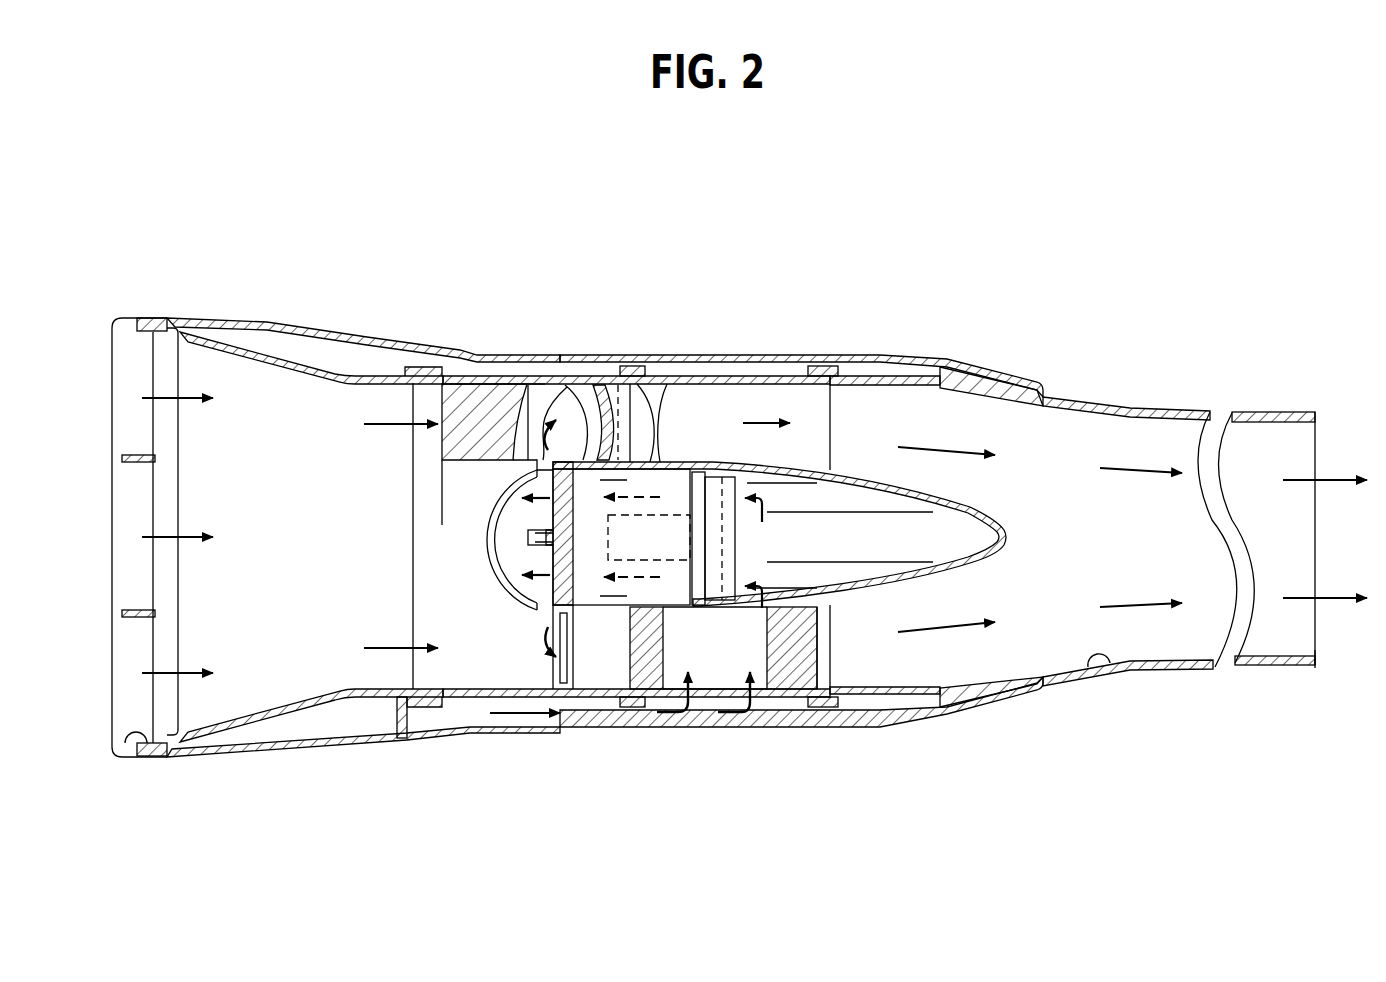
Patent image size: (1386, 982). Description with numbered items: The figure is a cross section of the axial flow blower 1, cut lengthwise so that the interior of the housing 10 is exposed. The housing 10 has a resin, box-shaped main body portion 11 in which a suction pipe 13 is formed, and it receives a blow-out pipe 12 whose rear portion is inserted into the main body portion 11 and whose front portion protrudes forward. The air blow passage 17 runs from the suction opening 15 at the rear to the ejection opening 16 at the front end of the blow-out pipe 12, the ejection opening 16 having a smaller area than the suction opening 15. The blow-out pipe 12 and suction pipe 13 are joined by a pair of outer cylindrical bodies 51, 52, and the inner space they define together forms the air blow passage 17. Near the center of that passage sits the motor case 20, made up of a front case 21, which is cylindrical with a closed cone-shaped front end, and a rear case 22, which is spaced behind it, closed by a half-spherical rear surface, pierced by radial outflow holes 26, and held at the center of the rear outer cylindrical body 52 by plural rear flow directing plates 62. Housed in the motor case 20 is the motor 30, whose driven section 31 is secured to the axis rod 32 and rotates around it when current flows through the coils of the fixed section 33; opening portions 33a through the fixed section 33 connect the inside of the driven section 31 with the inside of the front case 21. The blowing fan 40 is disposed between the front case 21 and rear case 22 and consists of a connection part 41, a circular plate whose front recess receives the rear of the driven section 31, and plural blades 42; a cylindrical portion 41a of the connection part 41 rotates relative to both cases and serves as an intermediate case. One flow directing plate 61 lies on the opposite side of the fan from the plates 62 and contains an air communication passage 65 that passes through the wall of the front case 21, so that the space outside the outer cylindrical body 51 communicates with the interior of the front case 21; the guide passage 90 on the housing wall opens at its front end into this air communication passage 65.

The axial flow blower 1 is at (460, 198).
The housing 10 is at (1015, 333).
The main body portion 11 is at (917, 357).
The blow-out pipe 12 is at (1147, 406).
The suction pipe 13 is at (311, 357).
The suction opening 15 is at (121, 759).
The ejection opening 16 is at (1334, 654).
The air blow passage 17 is at (1101, 668).
The motor case 20 is at (853, 462).
The front case 21 is at (990, 522).
The rear case 22 is at (482, 612).
The outflow holes 26 is at (457, 410).
The motor 30 is at (677, 462).
The driven section 31 is at (620, 385).
The axis rod 32 is at (612, 380).
The fixed section 33 is at (710, 440).
The opening portions 33a is at (727, 470).
The blowing fan 40 is at (623, 680).
The connection part 41 is at (607, 680).
The cylindrical portion 41a is at (600, 420).
The blades 42 is at (600, 387).
The outer cylindrical body 51 is at (775, 377).
The outer cylindrical body 52 is at (545, 387).
The flow directing plate 61 is at (855, 680).
The rear flow directing plates 62 is at (382, 383).
The air communication passage 65 is at (798, 680).
The guide passage 90 is at (437, 738).